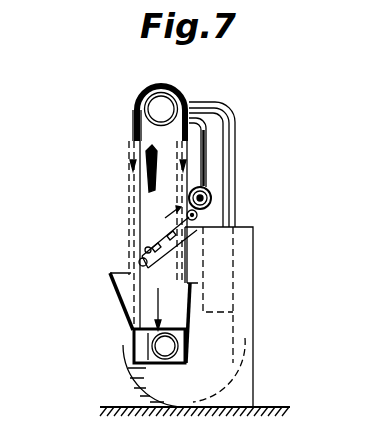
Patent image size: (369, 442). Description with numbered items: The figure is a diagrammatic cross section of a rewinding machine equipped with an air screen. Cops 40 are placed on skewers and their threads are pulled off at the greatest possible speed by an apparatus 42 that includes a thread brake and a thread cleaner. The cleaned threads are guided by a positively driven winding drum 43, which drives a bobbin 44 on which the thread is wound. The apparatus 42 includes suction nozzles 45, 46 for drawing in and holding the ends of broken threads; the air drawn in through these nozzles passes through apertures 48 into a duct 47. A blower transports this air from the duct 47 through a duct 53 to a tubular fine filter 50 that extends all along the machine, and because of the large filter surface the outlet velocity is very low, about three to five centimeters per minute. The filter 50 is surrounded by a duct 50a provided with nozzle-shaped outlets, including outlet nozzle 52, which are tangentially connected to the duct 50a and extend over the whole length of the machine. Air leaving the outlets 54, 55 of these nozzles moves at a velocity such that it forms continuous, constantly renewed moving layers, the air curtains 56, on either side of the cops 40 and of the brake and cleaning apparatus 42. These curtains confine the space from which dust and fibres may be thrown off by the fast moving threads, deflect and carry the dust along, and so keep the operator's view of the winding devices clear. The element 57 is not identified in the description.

The fine filter 50 is at (146, 90).
The duct 50a is at (181, 94).
The hood wall 57 is at (134, 121).
The outlet nozzle 52 is at (236, 122).
The duct 53 is at (224, 172).
The outlet 55 is at (208, 150).
The air curtain 56 is at (140, 196).
The cop 40 is at (140, 179).
The outlet 54 is at (132, 151).
The apparatus 42 is at (138, 248).
The bobbin 44 is at (212, 195).
The winding drum 43 is at (198, 215).
The suction nozzle 46 is at (180, 273).
The duct 47 is at (134, 212).
The suction nozzle 45 is at (124, 306).
The aperture 48 is at (140, 336).